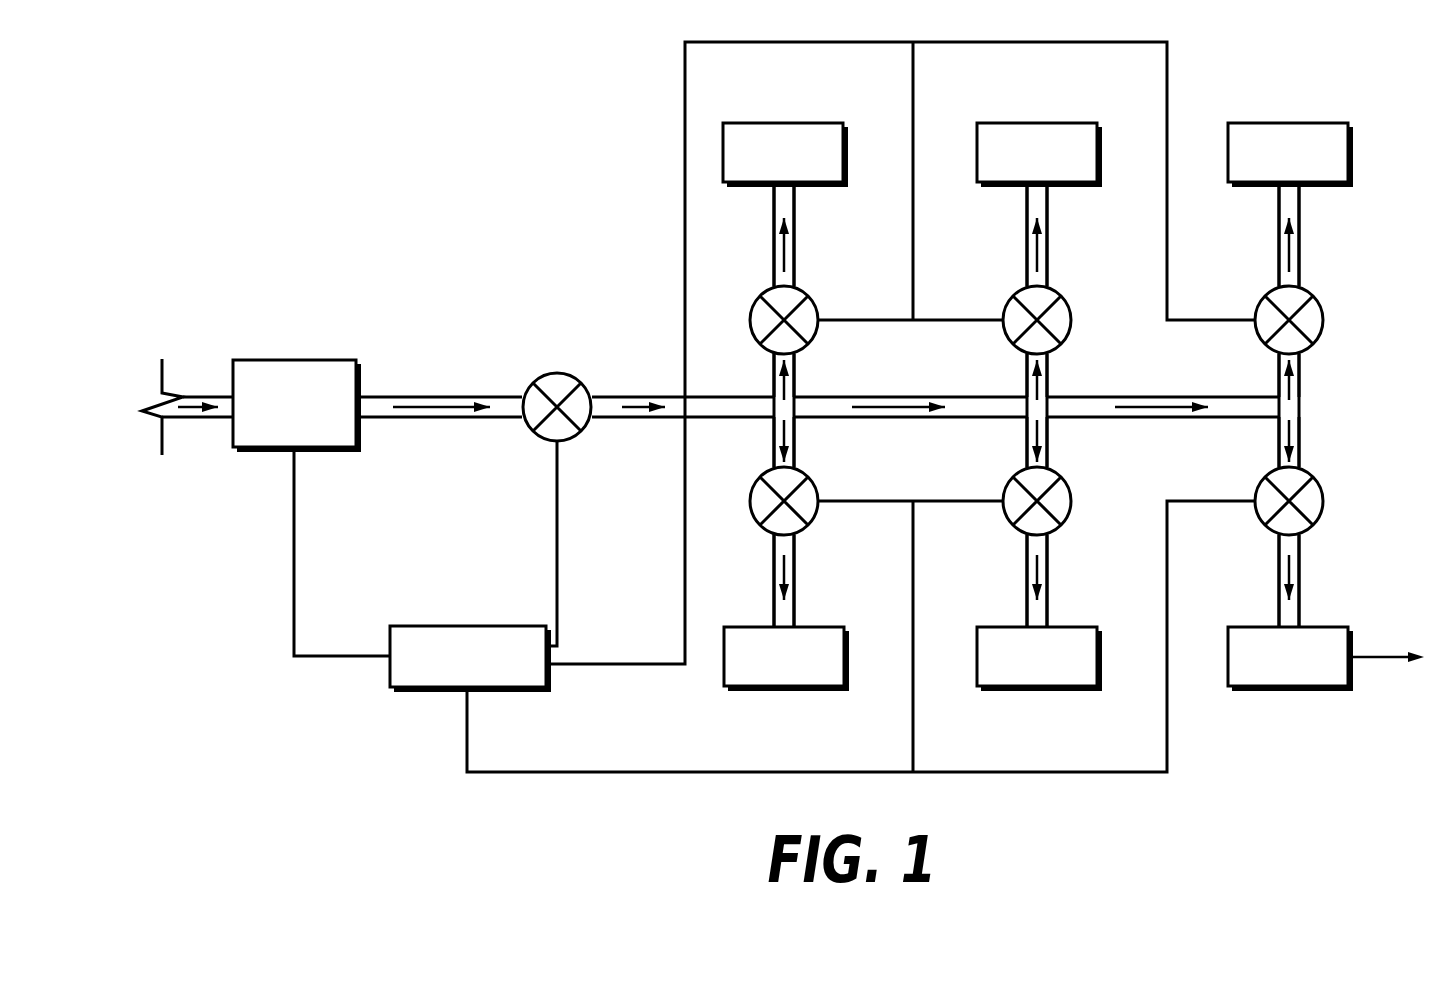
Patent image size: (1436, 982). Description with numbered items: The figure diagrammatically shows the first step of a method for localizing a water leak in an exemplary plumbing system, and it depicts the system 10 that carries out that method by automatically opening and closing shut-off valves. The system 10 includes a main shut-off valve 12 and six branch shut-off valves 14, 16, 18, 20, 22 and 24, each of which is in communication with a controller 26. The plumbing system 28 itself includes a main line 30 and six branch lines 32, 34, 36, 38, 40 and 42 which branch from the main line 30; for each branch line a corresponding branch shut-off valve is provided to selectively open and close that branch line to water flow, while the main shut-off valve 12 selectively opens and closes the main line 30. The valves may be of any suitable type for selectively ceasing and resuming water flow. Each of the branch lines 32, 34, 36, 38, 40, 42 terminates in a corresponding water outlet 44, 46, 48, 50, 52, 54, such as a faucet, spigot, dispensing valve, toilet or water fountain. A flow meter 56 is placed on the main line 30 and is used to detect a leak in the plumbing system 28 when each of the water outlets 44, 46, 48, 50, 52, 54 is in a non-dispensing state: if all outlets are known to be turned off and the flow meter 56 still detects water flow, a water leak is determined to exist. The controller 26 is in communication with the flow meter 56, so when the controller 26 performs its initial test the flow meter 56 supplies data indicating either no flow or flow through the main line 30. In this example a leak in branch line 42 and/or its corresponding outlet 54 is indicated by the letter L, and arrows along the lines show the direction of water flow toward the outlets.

The system 10 is at (423, 209).
The main shut-off valve 12 is at (557, 373).
The branch shut-off valve 14 is at (752, 310).
The branch shut-off valve 16 is at (1067, 310).
The branch shut-off valve 18 is at (1320, 310).
The branch shut-off valve 20 is at (752, 491).
The branch shut-off valve 22 is at (1067, 491).
The branch shut-off valve 24 is at (1320, 491).
The controller 26 is at (468, 626).
The plumbing system 28 is at (1346, 392).
The main line 30 is at (452, 397).
The branch line 32 is at (796, 375).
The branch line 34 is at (1026, 375).
The branch line 36 is at (1278, 370).
The branch line 38 is at (796, 448).
The branch line 40 is at (1026, 453).
The branch line 42 is at (1278, 444).
The water outlet 44 is at (787, 122).
The water outlet 46 is at (1039, 122).
The water outlet 48 is at (1291, 122).
The water outlet 50 is at (786, 690).
The water outlet 52 is at (1038, 690).
The water outlet 54 is at (1290, 690).
The flow meter 56 is at (294, 360).